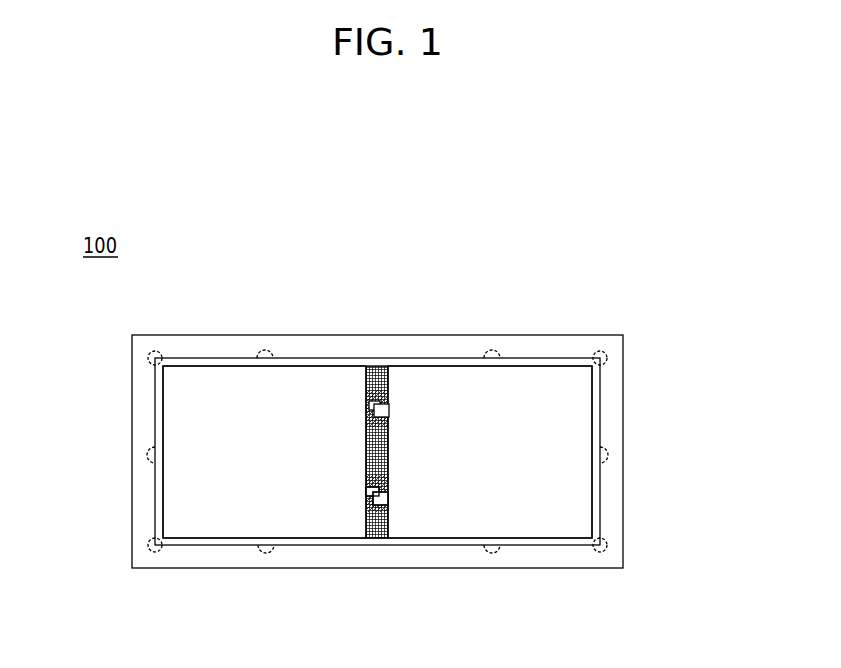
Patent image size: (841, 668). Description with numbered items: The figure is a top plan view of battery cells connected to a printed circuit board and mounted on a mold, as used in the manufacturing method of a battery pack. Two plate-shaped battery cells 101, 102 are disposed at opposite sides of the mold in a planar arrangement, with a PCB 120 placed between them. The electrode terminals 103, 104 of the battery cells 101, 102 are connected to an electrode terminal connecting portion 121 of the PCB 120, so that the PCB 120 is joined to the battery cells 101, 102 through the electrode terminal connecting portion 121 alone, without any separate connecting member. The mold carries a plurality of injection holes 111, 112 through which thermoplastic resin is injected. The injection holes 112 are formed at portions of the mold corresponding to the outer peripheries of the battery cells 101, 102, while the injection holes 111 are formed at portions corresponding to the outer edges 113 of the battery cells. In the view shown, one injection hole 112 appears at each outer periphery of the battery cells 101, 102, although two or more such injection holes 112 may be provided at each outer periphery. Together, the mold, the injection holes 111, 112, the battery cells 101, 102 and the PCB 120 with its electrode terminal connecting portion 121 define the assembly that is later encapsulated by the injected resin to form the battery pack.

The battery cell 101 is at (185, 412).
The battery cell 102 is at (577, 413).
The electrode terminal 103 is at (368, 497).
The electrode terminal 104 is at (381, 512).
The injection hole 111 is at (148, 358).
The injection hole 112 is at (272, 350).
The outer edge 113 is at (637, 329).
The PCB 120 is at (371, 370).
The electrode terminal connecting portion 121 is at (383, 388).